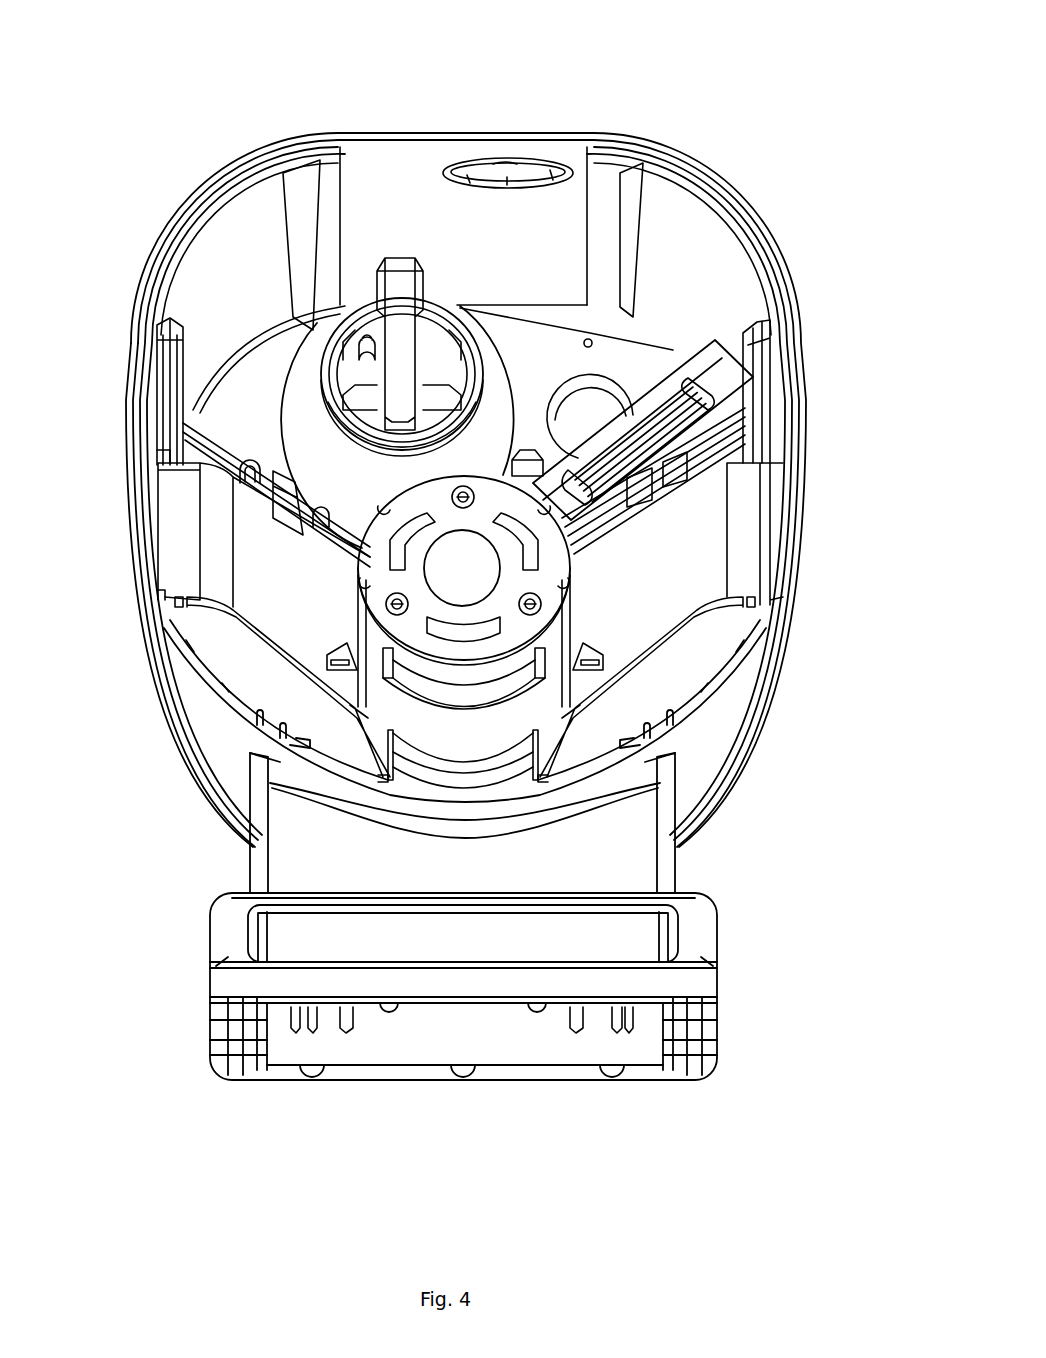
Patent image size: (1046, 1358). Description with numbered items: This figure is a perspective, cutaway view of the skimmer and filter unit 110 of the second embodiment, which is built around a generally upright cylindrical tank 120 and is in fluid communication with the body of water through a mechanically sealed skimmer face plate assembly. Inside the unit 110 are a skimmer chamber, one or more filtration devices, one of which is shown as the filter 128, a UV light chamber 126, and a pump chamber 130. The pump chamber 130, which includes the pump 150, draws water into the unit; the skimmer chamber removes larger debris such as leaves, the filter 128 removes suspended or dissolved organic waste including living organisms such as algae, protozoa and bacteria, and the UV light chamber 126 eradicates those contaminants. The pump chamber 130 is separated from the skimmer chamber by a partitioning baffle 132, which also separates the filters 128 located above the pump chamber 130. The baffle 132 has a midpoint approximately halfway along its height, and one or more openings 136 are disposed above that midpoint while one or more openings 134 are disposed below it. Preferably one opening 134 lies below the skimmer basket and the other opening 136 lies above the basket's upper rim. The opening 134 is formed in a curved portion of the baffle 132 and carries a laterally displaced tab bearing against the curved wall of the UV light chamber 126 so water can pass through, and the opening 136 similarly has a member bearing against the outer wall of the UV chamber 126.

The skimmer and filter unit 110 is at (188, 152).
The cylindrical tank 120 is at (198, 741).
The UV light chamber 126 is at (585, 581).
The filtration device 128 is at (738, 442).
The pump chamber 130 is at (558, 257).
The partitioning baffle 132 is at (280, 573).
The opening 134 is at (500, 773).
The opening 136 is at (513, 687).
The pump 150 is at (307, 373).